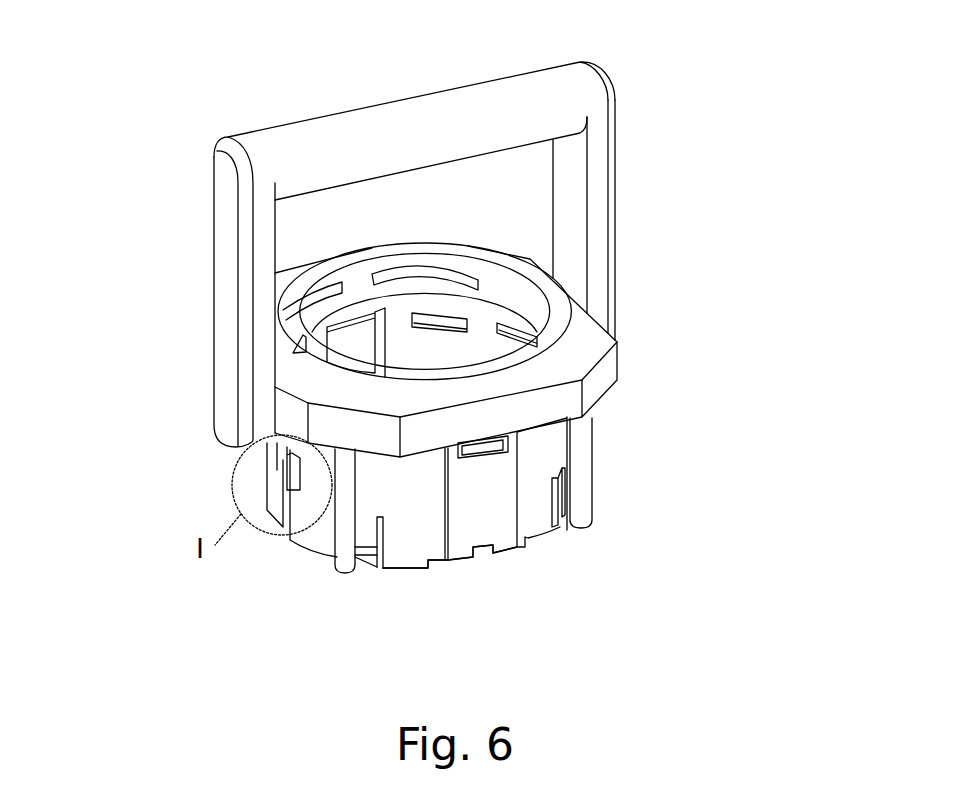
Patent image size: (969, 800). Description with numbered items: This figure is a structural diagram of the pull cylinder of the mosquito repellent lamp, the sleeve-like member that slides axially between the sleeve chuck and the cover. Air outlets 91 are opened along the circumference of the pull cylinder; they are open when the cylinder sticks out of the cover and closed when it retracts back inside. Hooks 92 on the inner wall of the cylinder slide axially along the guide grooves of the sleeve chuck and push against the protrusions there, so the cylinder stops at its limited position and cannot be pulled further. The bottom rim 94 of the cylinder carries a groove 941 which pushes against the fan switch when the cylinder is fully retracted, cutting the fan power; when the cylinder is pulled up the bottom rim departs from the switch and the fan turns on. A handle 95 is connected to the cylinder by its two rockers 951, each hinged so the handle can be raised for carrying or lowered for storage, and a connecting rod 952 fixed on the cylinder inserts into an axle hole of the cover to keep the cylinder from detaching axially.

The handle 95 is at (420, 128).
The rockers 951 is at (222, 298).
The connecting rod 952 is at (578, 468).
The air outlets 91 is at (452, 320).
The hooks 92 is at (386, 555).
The bottom rim 94 is at (330, 557).
The groove 941 is at (482, 548).